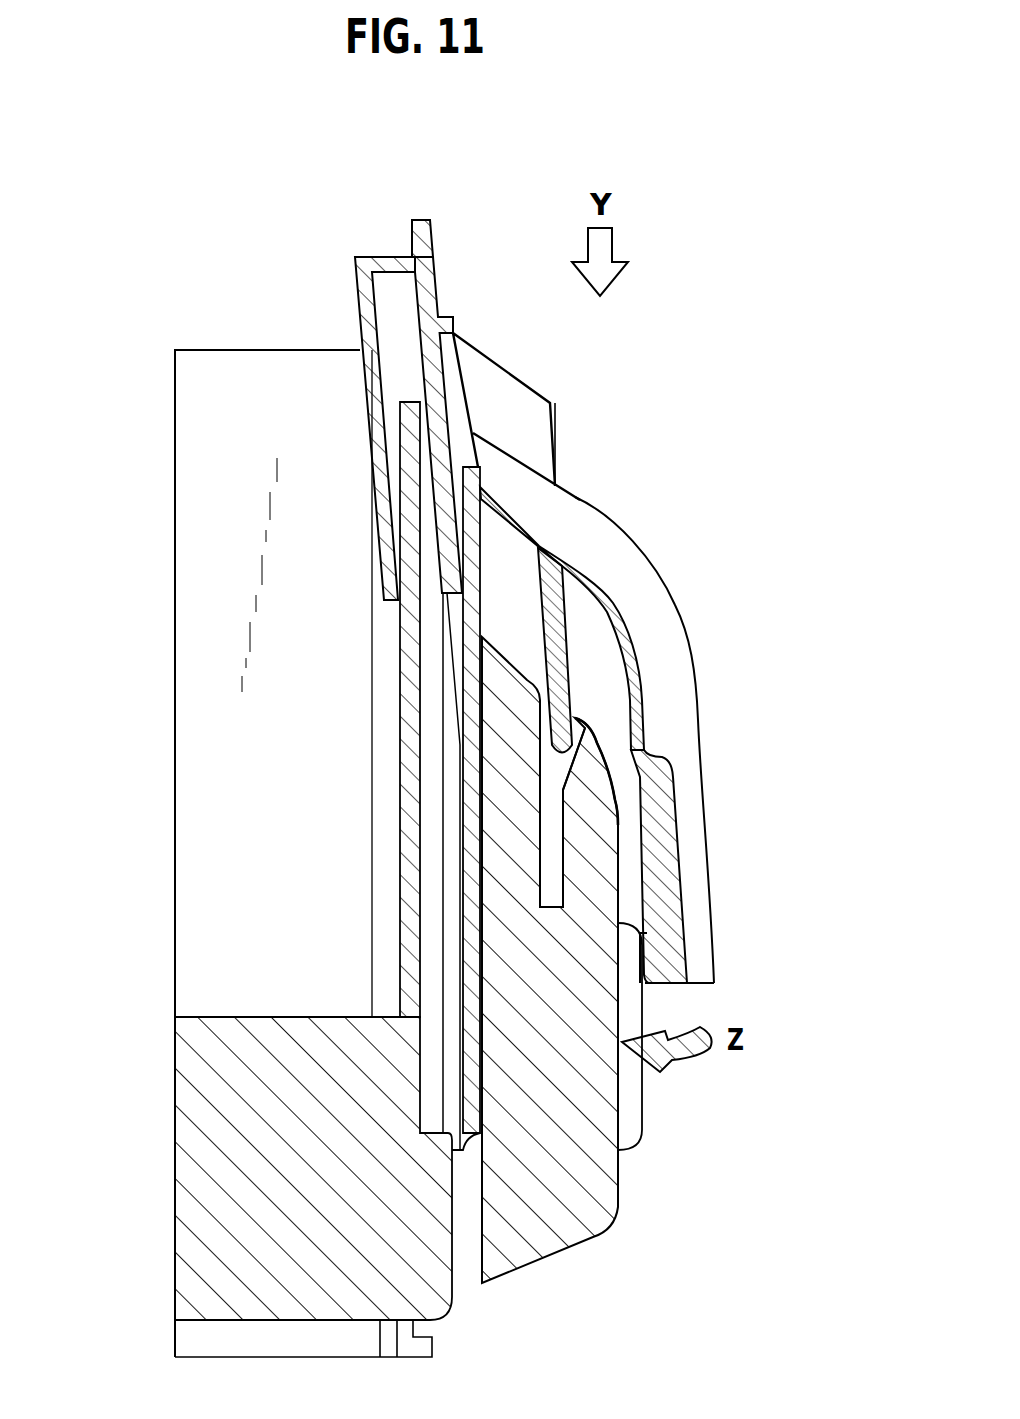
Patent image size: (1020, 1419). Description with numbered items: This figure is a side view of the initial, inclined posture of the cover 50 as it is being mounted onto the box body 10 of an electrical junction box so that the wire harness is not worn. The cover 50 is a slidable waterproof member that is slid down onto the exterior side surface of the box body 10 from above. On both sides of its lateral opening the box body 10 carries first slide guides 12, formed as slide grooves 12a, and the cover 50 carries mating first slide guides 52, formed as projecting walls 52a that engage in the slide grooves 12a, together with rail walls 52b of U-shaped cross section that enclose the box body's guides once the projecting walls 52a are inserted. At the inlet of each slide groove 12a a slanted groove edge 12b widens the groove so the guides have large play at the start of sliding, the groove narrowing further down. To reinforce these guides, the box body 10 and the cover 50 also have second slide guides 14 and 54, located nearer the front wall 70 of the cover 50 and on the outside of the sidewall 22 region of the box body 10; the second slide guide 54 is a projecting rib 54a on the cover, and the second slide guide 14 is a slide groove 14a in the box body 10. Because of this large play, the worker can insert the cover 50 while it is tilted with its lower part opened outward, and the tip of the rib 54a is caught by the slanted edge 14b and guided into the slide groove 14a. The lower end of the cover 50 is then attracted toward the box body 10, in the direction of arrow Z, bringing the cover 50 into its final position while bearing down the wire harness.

The box body 10 is at (151, 951).
The first slide guide 12 is at (485, 731).
The slide groove 12a is at (445, 640).
The groove edge 12b is at (445, 410).
The second slide guide 14 is at (675, 803).
The slide groove 14a is at (553, 872).
The slanted edge 14b is at (573, 710).
The sidewall 22 is at (573, 1210).
The cover 50 is at (696, 740).
The first slide guide 52 is at (446, 410).
The projecting wall 52a is at (437, 453).
The rail wall 52b is at (360, 318).
The second slide guide 54 is at (645, 735).
The rib 54a is at (555, 690).
The front wall 70 is at (690, 952).